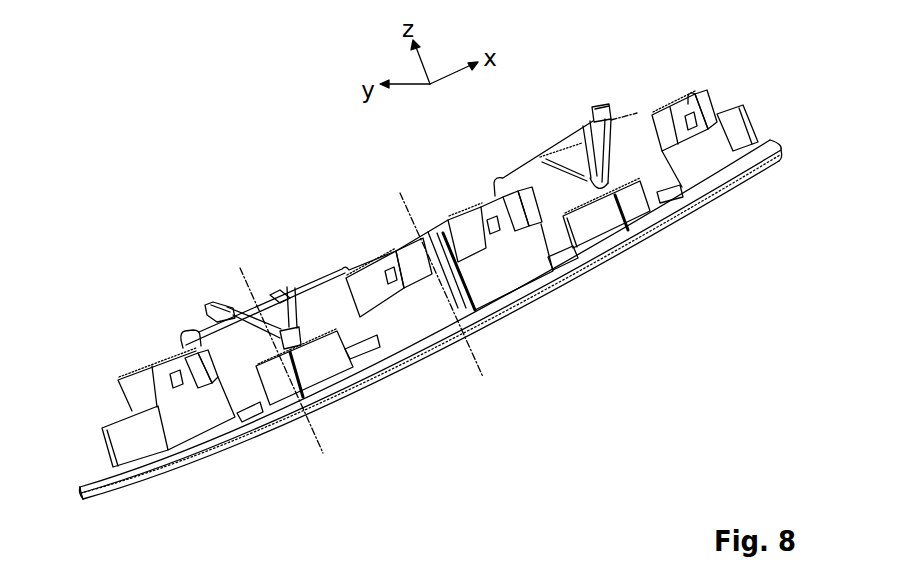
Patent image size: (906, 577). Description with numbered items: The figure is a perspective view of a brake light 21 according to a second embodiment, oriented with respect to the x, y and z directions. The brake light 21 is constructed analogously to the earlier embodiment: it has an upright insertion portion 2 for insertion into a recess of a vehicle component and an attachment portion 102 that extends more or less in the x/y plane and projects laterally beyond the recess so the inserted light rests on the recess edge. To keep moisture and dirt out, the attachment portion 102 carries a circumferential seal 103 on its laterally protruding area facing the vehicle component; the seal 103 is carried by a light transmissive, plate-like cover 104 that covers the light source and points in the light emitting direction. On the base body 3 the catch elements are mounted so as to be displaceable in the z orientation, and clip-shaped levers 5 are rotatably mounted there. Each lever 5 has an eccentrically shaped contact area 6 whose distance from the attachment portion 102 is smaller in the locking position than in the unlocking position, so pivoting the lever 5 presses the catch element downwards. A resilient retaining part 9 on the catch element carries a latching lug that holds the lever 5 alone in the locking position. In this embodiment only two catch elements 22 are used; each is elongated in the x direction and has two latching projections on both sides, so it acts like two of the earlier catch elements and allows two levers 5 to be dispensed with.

The insertion portion 2 is at (412, 311).
The attachment portion 102 is at (70, 486).
The circumferential seal 103 is at (117, 490).
The cover 104 is at (353, 388).
The base body 3 is at (200, 427).
The lever 5 is at (208, 303).
The eccentrically shaped contact area 6 is at (610, 188).
The resilient retaining part 9 is at (274, 290).
The brake light 21 is at (265, 177).
The catch element 22 is at (320, 295).